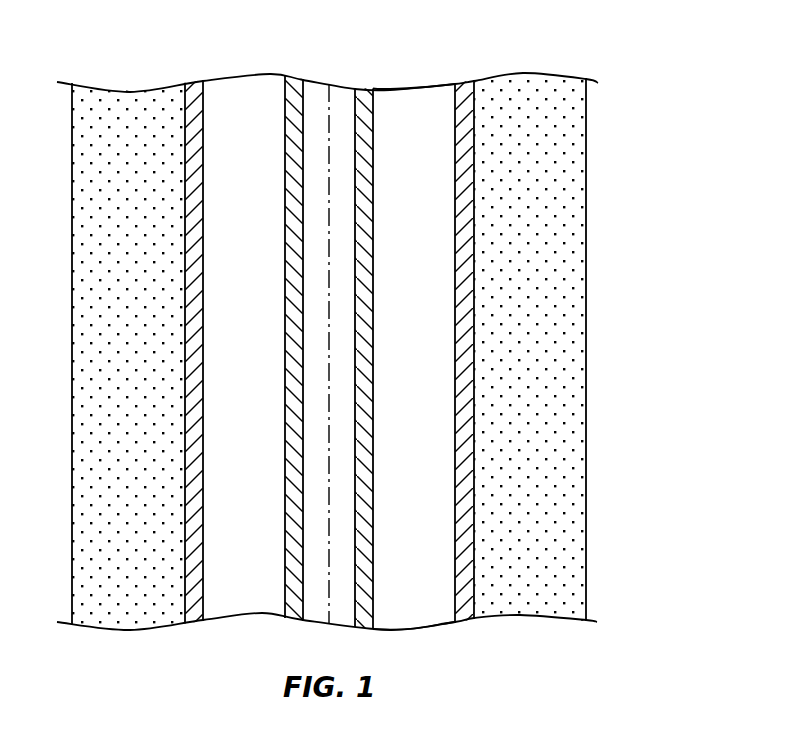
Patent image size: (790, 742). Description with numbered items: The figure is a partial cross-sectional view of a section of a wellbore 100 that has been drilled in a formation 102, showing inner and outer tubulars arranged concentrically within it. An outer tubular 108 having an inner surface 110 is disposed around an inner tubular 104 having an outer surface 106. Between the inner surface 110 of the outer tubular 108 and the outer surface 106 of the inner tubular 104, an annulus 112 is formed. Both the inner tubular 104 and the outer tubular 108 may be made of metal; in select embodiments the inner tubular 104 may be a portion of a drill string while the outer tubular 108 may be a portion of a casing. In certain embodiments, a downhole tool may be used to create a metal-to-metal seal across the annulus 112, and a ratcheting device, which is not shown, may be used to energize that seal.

The wellbore 100 is at (562, 64).
The formation 102 is at (542, 335).
The inner tubular 104 is at (365, 154).
The outer surface 106 is at (373, 197).
The outer tubular 108 is at (465, 225).
The inner surface 110 is at (454, 267).
The annulus 112 is at (432, 305).